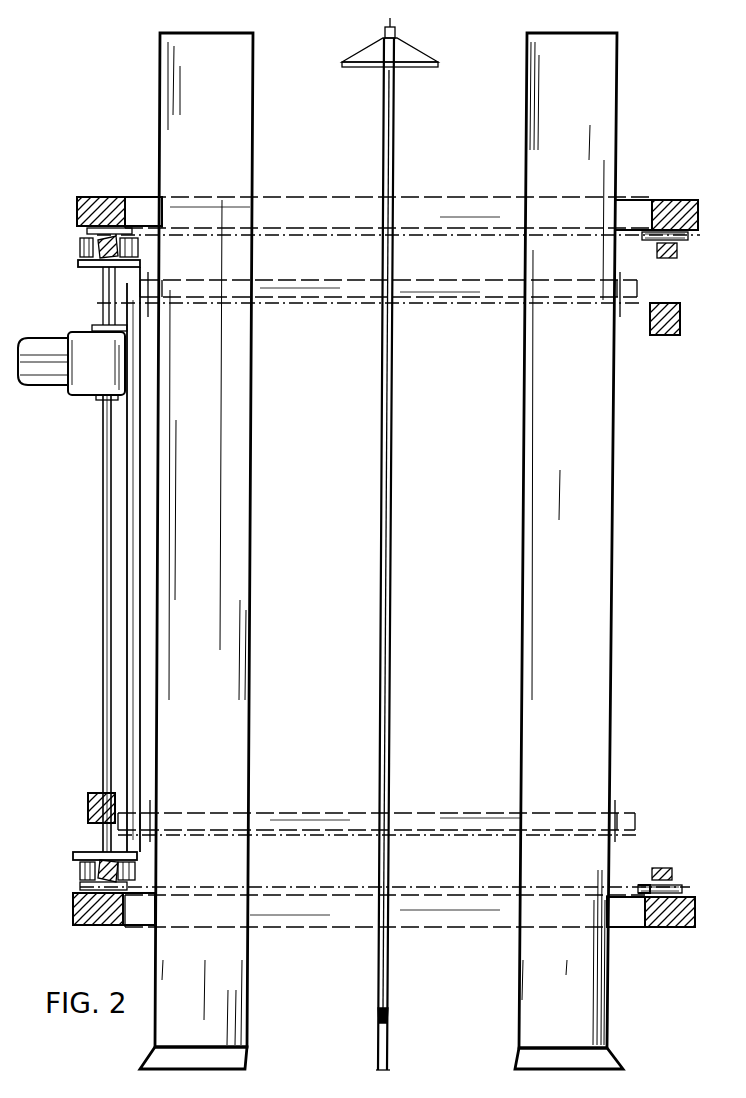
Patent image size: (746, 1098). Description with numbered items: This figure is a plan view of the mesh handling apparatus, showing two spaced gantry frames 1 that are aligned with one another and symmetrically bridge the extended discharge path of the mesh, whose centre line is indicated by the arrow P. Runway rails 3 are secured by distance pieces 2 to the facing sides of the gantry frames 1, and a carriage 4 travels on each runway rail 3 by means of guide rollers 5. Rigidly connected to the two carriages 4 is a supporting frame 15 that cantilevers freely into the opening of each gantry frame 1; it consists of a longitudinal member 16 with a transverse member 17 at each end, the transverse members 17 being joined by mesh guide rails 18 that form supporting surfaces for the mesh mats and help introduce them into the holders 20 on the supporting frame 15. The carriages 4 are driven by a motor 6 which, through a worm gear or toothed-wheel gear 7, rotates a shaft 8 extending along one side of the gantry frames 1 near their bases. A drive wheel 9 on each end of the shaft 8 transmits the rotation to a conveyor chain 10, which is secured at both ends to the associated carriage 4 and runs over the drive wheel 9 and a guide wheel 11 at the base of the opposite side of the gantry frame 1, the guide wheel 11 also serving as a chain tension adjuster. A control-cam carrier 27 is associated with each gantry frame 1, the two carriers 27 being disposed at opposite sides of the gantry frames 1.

The gantry frame 1 is at (107, 204).
The distance piece 2 is at (108, 228).
The runway rail 3 is at (123, 243).
The carriage 4 is at (95, 267).
The guide roller 5 is at (80, 249).
The motor 6 is at (41, 372).
The worm gear or toothed-wheel gear 7 is at (82, 395).
The shaft 8 is at (103, 475).
The drive wheel 9 is at (80, 887).
The conveyor chain 10 is at (437, 233).
The guide wheel 11 is at (645, 880).
The supporting frame 15 is at (564, 482).
The longitudinal member 16 is at (130, 570).
The transverse member 17 is at (413, 813).
The mesh guide rail 18 is at (386, 630).
The holder 20 is at (235, 673).
The control-cam carrier 27 is at (90, 795).
The arrow indicating centre line of mesh discharge path P is at (388, 1040).